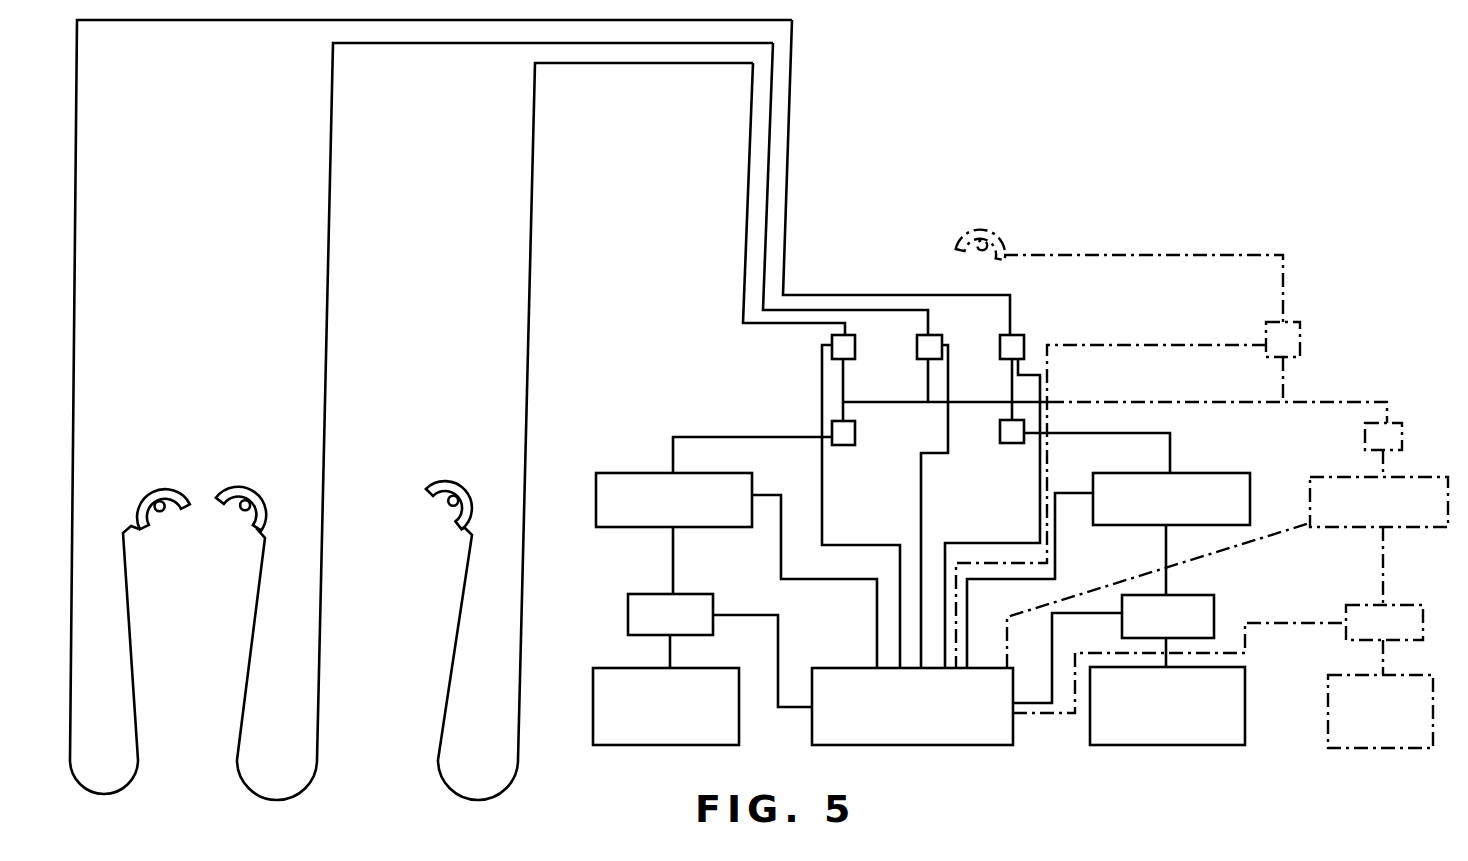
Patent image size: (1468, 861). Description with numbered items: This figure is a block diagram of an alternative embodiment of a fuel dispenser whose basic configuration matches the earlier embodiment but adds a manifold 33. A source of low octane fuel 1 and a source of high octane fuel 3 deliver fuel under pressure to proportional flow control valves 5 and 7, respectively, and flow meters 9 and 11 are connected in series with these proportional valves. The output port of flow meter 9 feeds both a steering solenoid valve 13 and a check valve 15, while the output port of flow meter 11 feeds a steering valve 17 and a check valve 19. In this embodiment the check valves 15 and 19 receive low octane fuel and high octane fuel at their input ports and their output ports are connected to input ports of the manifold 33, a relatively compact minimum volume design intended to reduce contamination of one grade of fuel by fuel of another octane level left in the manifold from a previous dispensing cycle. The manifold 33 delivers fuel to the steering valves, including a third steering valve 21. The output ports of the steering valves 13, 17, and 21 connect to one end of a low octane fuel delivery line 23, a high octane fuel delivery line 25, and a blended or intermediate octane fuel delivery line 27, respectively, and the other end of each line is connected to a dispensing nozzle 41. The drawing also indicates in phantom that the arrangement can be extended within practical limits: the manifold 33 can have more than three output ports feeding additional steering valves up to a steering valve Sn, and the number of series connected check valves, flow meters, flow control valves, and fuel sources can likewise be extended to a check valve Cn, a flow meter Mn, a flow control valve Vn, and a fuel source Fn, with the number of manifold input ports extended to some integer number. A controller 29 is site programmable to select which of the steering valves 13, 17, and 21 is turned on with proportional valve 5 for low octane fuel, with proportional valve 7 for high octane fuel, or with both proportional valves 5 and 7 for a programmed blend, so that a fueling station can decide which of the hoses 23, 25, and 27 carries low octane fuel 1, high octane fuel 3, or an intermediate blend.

The source of low octane fuel 1 is at (593, 705).
The source of high octane fuel 3 is at (1245, 703).
The proportional flow control valve 5 is at (651, 594).
The proportional flow control valve 7 is at (1175, 595).
The flow meter 9 is at (709, 473).
The flow meter 11 is at (1183, 473).
The steering solenoid valve 13 is at (832, 338).
The check valve 15 is at (845, 445).
The steering valve 17 is at (1000, 345).
The check valve 19 is at (1005, 445).
The third steering valve 21 is at (917, 345).
The low octane fuel delivery line 23 is at (530, 302).
The high octane fuel delivery line 25 is at (78, 303).
The blended or intermediate octane fuel delivery line 27 is at (333, 302).
The controller 29 is at (926, 745).
The manifold 33 is at (1010, 402).
The dispensing nozzle 41 is at (157, 487).
The steering valve Sn is at (1315, 330).
The check valve Cn is at (1404, 440).
The flow meter Mn is at (1392, 530).
The flow control valve Vn is at (1385, 605).
The source of fuel Fn is at (1395, 748).